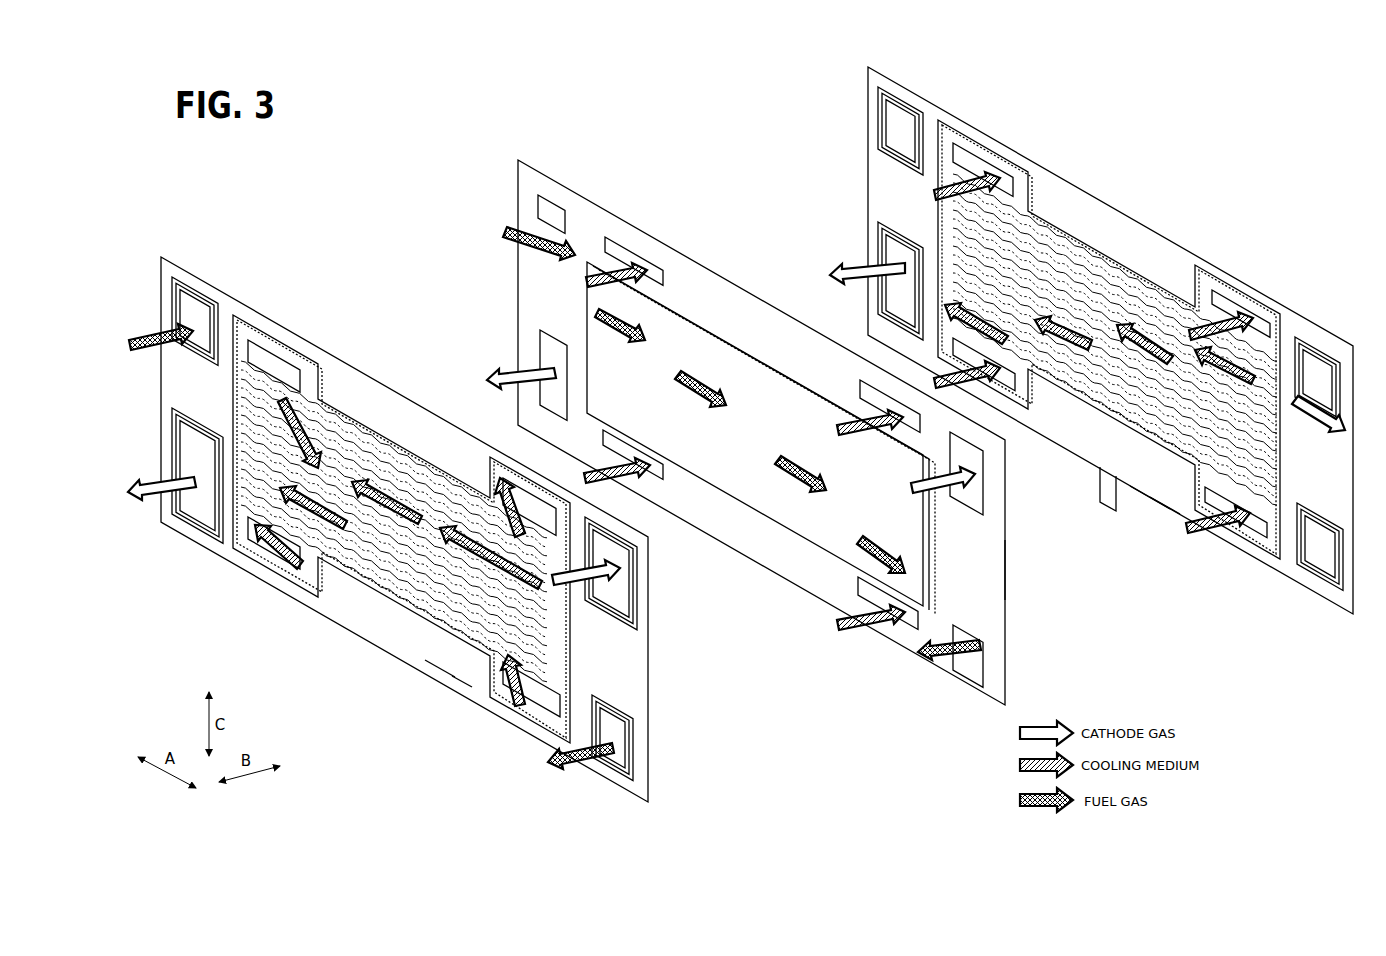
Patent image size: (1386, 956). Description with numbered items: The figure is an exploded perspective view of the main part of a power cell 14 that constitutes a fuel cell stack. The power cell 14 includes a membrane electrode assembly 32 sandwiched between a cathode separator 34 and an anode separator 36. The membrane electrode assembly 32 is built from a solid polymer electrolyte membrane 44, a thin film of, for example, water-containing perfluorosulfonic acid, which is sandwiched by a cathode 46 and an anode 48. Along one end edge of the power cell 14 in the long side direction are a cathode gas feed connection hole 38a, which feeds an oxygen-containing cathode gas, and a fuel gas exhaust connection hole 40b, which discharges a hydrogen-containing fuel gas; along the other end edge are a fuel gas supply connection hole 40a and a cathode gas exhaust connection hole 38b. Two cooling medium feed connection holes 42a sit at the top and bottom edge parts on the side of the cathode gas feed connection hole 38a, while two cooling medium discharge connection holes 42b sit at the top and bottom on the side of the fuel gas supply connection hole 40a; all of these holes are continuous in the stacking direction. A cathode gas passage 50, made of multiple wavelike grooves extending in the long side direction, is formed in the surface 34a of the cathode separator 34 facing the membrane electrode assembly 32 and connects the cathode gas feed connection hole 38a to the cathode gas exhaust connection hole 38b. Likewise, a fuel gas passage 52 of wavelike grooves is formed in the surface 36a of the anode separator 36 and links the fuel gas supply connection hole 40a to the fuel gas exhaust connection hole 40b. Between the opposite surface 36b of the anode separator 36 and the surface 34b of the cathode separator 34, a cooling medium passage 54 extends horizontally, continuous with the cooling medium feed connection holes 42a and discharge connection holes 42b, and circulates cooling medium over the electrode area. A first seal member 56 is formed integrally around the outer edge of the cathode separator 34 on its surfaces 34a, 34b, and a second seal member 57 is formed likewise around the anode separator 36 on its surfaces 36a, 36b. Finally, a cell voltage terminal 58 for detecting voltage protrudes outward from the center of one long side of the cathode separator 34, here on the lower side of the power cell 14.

The power cell 14 is at (369, 153).
The membrane electrode assembly 32 is at (518, 157).
The cathode separator 34 is at (865, 65).
The surface of the cathode separator 34a is at (1147, 480).
The surface of the cathode separator 34b is at (1160, 478).
The anode separator 36 is at (161, 254).
The surface of the anode separator 36a is at (462, 676).
The surface of the anode separator 36b is at (437, 662).
The cathode gas feed connection hole 38a is at (620, 586).
The cathode gas exhaust connection hole 38b is at (196, 520).
The fuel gas supply connection hole 40a is at (190, 322).
The fuel gas exhaust connection hole 40b is at (622, 734).
The cooling medium feed connection hole 42a is at (503, 478).
The cooling medium discharge connection hole 42b is at (270, 352).
The solid polymer electrolyte membrane 44 is at (990, 568).
The cathode 46 is at (718, 320).
The anode 48 is at (800, 526).
The cathode gas passage 50 is at (1122, 258).
The fuel gas passage 52 is at (360, 430).
The cooling medium passage 54 is at (420, 592).
The first seal member 56 is at (1055, 222).
The second seal member 57 is at (237, 322).
The cell voltage terminal 58 is at (1106, 512).